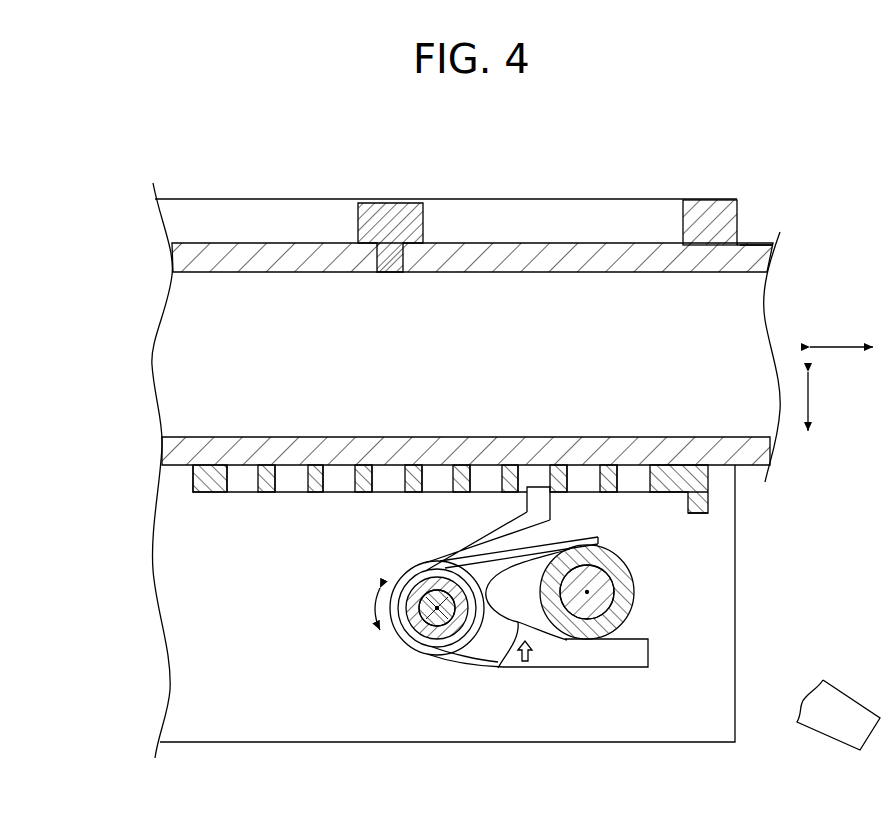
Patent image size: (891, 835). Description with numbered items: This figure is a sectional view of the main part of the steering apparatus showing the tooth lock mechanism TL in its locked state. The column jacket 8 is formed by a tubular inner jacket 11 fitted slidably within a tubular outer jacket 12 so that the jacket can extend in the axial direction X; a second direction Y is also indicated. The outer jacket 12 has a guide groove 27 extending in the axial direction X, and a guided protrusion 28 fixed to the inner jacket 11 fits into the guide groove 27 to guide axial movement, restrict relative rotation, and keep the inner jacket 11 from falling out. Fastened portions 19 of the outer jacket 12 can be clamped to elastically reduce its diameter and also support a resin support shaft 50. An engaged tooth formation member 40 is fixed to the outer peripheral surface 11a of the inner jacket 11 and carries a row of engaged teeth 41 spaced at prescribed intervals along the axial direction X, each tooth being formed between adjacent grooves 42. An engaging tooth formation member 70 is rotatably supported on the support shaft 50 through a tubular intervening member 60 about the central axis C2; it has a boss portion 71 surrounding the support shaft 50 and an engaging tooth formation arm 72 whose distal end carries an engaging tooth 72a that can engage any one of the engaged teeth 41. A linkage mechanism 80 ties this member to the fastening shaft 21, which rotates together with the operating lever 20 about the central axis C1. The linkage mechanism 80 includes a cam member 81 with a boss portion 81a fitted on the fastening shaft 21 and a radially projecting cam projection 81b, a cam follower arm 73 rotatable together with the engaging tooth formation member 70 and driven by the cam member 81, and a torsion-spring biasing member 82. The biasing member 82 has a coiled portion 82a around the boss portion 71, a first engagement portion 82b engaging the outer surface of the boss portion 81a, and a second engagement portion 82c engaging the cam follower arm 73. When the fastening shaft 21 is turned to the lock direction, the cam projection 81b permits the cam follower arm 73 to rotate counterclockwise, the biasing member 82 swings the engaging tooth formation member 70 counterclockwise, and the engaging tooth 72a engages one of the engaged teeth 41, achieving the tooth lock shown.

The column jacket 8 is at (697, 151).
The inner jacket 11 is at (749, 241).
The outer peripheral surface 11a is at (760, 244).
The outer jacket 12 is at (708, 205).
The fastened portions 19 is at (232, 722).
The operating lever 20 is at (845, 710).
The fastening shaft 21 is at (590, 580).
The guide groove 27 is at (292, 215).
The guided protrusion 28 is at (398, 212).
The engaged tooth formation member 40 is at (210, 494).
The engaged teeth 41 is at (315, 468).
The grooves 42 is at (387, 472).
The support shaft 50 is at (436, 660).
The intervening member 60 is at (420, 642).
The engaging tooth formation member 70 is at (413, 611).
The boss portion 71 is at (412, 578).
The engaging tooth formation arm 72 is at (487, 479).
The engaging tooth 72a is at (530, 486).
The cam follower arm 73 is at (578, 660).
The linkage mechanism 80 is at (510, 668).
The cam member 81 is at (577, 666).
The boss portion 81a is at (625, 610).
The cam projection 81b is at (503, 640).
The biasing member 82 is at (489, 648).
The coiled portion 82a is at (410, 640).
The first engagement portion 82b is at (585, 540).
The second engagement portion 82c is at (508, 672).
The central axis C1 is at (588, 592).
The central axis C2 is at (437, 608).
The tooth lock mechanism TL is at (440, 666).
The axial direction X is at (843, 347).
The Y direction Y is at (810, 403).